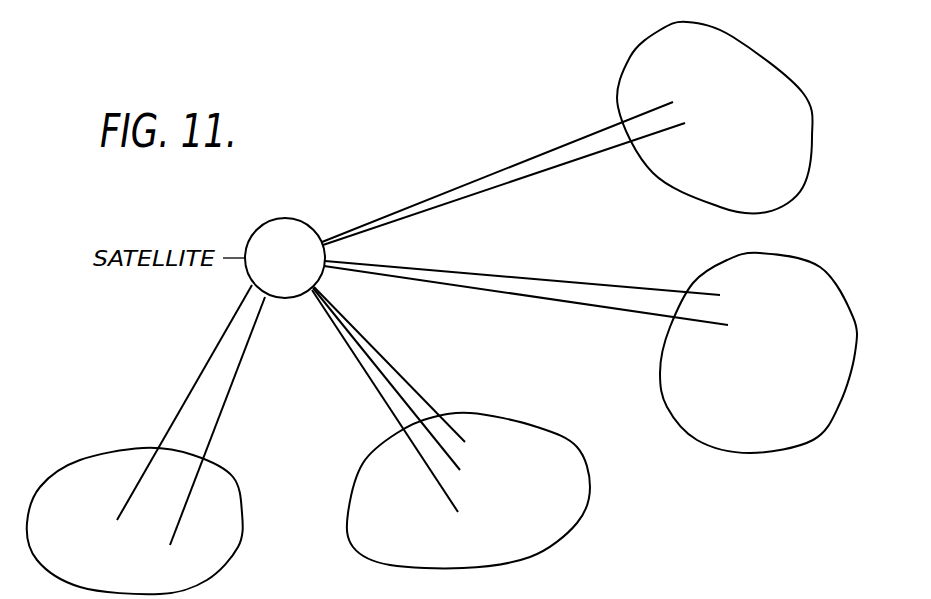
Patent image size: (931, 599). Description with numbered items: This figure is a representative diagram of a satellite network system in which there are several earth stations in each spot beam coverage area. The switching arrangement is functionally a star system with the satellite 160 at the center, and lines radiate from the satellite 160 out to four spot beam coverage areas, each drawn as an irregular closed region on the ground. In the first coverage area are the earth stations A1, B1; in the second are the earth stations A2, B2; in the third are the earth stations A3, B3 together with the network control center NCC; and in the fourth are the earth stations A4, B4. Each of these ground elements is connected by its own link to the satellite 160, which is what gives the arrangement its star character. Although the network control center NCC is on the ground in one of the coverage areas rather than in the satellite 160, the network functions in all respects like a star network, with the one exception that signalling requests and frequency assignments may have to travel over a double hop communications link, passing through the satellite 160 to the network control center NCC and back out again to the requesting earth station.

The satellite 160 is at (272, 218).
The earth station A1 is at (514, 162).
The earth station B1 is at (523, 179).
The earth station A2 is at (540, 283).
The earth station B2 is at (545, 305).
The earth station A3 is at (409, 373).
The earth station B3 is at (403, 392).
The network control center NCC is at (404, 410).
The earth station A4 is at (170, 420).
The earth station B4 is at (208, 436).